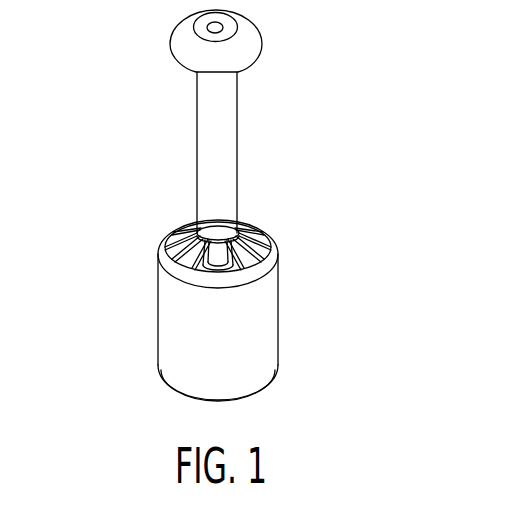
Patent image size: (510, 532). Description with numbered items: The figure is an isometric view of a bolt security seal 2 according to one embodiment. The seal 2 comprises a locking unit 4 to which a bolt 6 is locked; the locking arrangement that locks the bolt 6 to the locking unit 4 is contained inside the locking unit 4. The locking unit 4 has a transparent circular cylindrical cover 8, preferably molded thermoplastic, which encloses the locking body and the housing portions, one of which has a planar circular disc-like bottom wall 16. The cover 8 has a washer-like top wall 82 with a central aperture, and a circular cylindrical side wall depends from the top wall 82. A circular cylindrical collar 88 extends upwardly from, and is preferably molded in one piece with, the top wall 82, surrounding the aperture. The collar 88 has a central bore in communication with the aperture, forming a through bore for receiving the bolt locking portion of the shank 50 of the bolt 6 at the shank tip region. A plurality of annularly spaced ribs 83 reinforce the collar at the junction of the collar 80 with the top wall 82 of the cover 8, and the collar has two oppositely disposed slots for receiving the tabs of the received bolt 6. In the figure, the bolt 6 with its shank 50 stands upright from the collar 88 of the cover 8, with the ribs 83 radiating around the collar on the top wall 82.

The seal 2 is at (280, 132).
The locking unit 4 is at (287, 330).
The bolt 6 is at (193, 144).
The cover 8 is at (266, 293).
The bottom wall 16 is at (279, 383).
The shank 50 is at (229, 100).
The collar 80 is at (198, 215).
The top wall 82 is at (263, 240).
The ribs 83 is at (258, 222).
The collar 88 is at (237, 207).